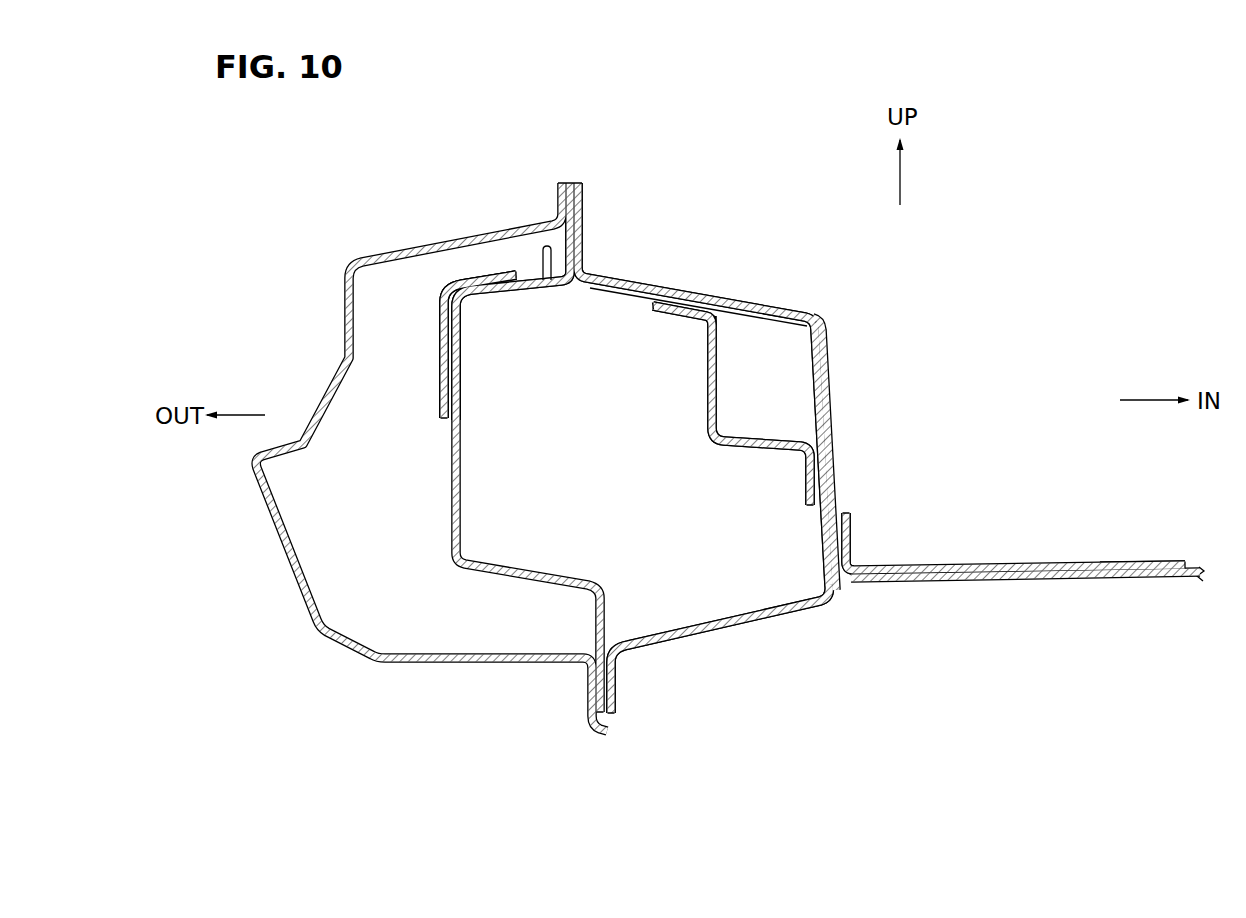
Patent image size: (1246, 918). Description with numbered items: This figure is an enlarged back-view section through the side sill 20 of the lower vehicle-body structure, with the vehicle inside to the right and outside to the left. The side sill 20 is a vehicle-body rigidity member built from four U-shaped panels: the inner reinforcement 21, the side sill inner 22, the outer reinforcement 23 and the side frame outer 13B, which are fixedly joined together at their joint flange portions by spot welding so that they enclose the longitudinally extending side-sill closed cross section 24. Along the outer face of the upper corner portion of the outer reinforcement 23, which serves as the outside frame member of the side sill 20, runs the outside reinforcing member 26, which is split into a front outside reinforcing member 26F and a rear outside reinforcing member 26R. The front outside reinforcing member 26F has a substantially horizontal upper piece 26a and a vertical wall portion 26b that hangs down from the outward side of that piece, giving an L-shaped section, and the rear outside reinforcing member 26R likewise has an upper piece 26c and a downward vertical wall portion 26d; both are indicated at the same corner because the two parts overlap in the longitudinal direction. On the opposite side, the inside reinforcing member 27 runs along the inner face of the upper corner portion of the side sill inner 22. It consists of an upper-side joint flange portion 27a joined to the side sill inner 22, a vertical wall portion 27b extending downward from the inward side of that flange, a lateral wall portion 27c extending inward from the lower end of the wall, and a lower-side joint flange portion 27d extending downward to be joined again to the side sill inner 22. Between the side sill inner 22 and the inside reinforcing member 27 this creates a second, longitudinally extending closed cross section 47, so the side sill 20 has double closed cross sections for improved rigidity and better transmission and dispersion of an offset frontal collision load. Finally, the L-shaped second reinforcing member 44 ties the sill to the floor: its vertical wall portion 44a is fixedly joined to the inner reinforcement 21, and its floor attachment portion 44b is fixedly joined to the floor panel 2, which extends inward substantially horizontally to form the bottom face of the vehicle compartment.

The floor panel 2 is at (1077, 584).
The side frame outer 13B is at (263, 506).
The side sill 20 is at (840, 430).
The inner reinforcement 21 is at (824, 363).
The side sill inner 22 is at (810, 380).
The outer reinforcement 23 is at (468, 498).
The side-sill closed cross section 24 is at (600, 494).
The outside reinforcing member 26 is at (262, 281).
The front outside reinforcing member 26F is at (440, 312).
The rear outside reinforcing member 26R is at (440, 357).
The upper piece 26a is at (470, 280).
The vertical wall portion 26b is at (439, 372).
The upper piece 26c is at (527, 271).
The vertical wall portion 26d is at (440, 405).
The inside reinforcing member 27 is at (707, 416).
The upper-side joint flange portion 27a is at (672, 309).
The vertical wall portion 27b is at (708, 366).
The lateral wall portion 27c is at (746, 445).
The lower-side joint flange portion 27d is at (810, 494).
The second reinforcing member 44 is at (997, 561).
The vertical wall portion 44a is at (852, 530).
The floor attachment portion 44b is at (1127, 562).
The closed cross section 47 is at (745, 333).